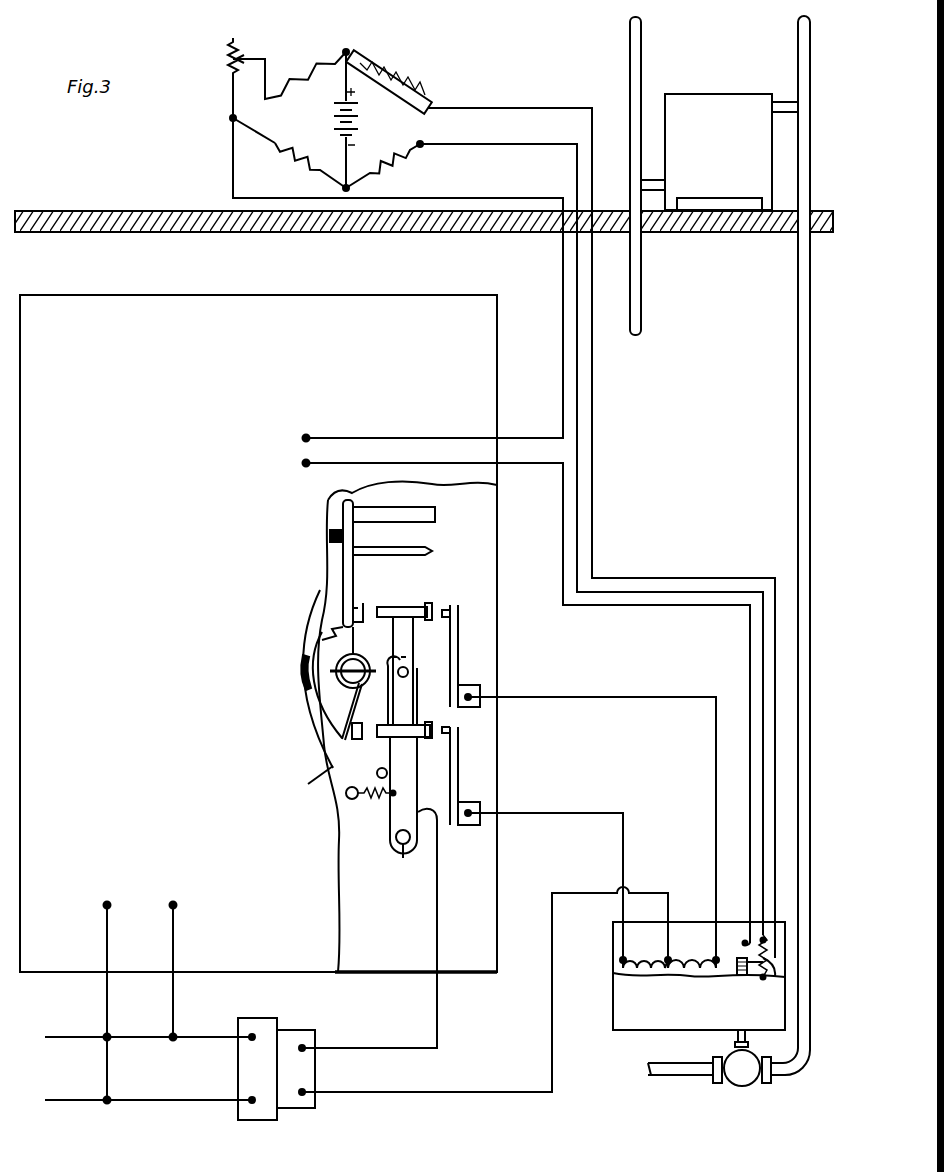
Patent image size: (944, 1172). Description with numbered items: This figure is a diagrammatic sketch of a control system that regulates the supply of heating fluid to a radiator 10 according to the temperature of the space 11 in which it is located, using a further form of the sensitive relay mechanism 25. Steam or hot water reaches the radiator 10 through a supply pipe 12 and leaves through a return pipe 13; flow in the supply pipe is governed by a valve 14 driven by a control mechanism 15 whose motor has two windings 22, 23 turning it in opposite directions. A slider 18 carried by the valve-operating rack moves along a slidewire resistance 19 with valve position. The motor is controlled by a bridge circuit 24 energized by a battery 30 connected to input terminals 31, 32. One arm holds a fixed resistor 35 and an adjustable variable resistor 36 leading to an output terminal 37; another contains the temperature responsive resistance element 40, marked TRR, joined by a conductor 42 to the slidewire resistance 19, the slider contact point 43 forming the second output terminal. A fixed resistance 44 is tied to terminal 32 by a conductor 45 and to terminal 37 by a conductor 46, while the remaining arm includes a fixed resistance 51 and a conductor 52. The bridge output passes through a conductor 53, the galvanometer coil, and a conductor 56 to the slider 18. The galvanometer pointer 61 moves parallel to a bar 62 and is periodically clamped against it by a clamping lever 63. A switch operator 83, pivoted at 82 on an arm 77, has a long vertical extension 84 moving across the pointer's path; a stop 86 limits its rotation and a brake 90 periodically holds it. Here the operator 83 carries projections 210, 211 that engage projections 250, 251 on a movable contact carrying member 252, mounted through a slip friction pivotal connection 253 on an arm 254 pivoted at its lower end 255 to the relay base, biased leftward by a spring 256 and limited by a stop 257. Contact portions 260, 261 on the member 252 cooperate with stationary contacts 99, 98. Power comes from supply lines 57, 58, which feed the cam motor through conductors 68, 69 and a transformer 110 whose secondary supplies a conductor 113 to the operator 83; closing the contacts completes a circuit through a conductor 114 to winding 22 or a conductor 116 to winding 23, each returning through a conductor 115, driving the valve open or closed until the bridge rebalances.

The radiator 10 is at (694, 100).
The space 11 is at (688, 58).
The supply pipe 12 is at (822, 140).
The return pipe 13 is at (630, 63).
The valve 14 is at (742, 1086).
The control mechanism 15 is at (688, 920).
The slider 18 is at (742, 944).
The slidewire resistance 19 is at (768, 942).
The winding 22 is at (656, 946).
The winding 23 is at (703, 946).
The bridge circuit 24 is at (305, 128).
The sensitive relay mechanism 25 is at (428, 363).
The battery 30 is at (362, 127).
The input terminal 31 is at (346, 52).
The input terminal 32 is at (350, 190).
The fixed resistor 35 is at (300, 76).
The variable resistor 36 is at (230, 67).
The output terminal 37 is at (230, 118).
The resistance element 40 is at (432, 87).
The temperature responsive resistor label TRR is at (461, 62).
The conductor 42 is at (593, 382).
The point of contact 43 is at (766, 978).
The fixed resistance 44 is at (295, 152).
The conductor 45 is at (326, 172).
The conductor 46 is at (258, 130).
The fixed resistance 51 is at (410, 158).
The conductor 52 is at (470, 144).
The conductor 53 is at (455, 198).
The conductor 56 is at (561, 525).
The supply line 57 is at (52, 1038).
The supply line 58 is at (56, 1098).
The pointer 61 is at (329, 533).
The bar 62 is at (435, 515).
The clamping lever 63 is at (433, 552).
The conductor 68 is at (108, 1000).
The conductor 69 is at (174, 996).
The arm 77 is at (316, 787).
The pivot 82 is at (366, 683).
The switch operator 83 is at (340, 714).
The long vertical extension 84 is at (354, 540).
The stop 86 is at (326, 632).
The brake 90 is at (300, 652).
The stationary contact 98 is at (460, 760).
The stationary contact 99 is at (468, 615).
The transformer 110 is at (266, 1120).
The conductor 113 is at (437, 888).
The conductor 114 is at (598, 802).
The conductor 115 is at (560, 1030).
The conductor 116 is at (716, 797).
The projection 210 is at (366, 592).
The projection 211 is at (362, 738).
The projection 250 is at (386, 604).
The projection 251 is at (395, 740).
The movable contact carrying member 252 is at (408, 650).
The slip friction pivotal connection 253 is at (410, 672).
The arm 254 is at (418, 775).
The lower end 255 is at (403, 858).
The spring 256 is at (370, 800).
The stop 257 is at (377, 773).
The contact portion 260 is at (428, 603).
The contact portion 261 is at (428, 722).